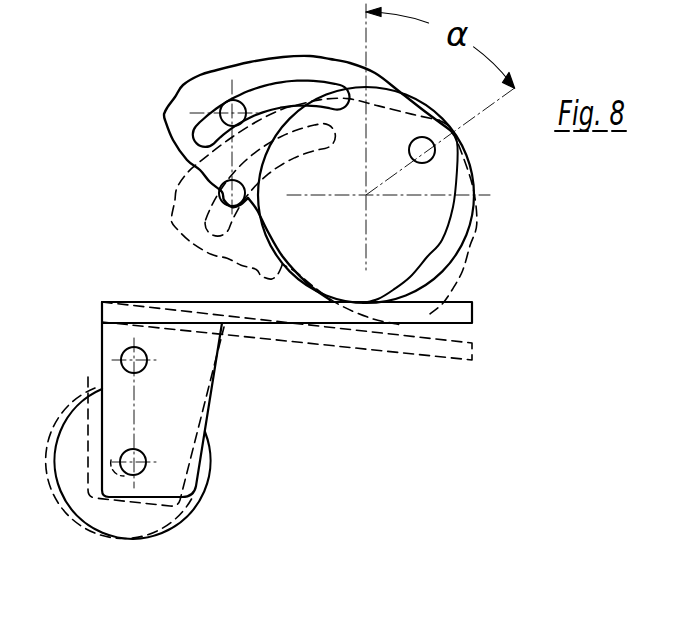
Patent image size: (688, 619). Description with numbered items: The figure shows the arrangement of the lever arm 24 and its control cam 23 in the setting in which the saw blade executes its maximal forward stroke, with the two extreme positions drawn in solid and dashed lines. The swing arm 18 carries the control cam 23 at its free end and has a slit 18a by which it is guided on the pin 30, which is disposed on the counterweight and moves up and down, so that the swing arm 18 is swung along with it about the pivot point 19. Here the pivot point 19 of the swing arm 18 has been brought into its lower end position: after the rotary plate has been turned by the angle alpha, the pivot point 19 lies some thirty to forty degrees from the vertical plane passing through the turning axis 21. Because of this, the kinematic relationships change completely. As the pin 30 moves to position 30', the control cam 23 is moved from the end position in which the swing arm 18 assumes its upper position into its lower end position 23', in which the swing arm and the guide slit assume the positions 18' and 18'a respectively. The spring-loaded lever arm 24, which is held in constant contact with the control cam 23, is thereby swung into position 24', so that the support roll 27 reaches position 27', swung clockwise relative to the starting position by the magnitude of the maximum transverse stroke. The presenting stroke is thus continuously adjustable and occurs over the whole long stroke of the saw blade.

The swing arm 18 is at (311, 151).
The slit 18a is at (297, 92).
The pivot point 19 is at (436, 152).
The turning axis 21 is at (366, 195).
The control cam 23 is at (280, 250).
The lever arm 24 is at (309, 313).
The pin 30 is at (216, 68).
The swing arm position 18' is at (332, 221).
The guide slit position 18'a is at (226, 184).
The control cam lower end position 23' is at (343, 322).
The lever arm position 24' is at (287, 357).
The support roll 27 is at (138, 491).
The support roll position 27' is at (119, 490).
The pin position 30' is at (179, 179).